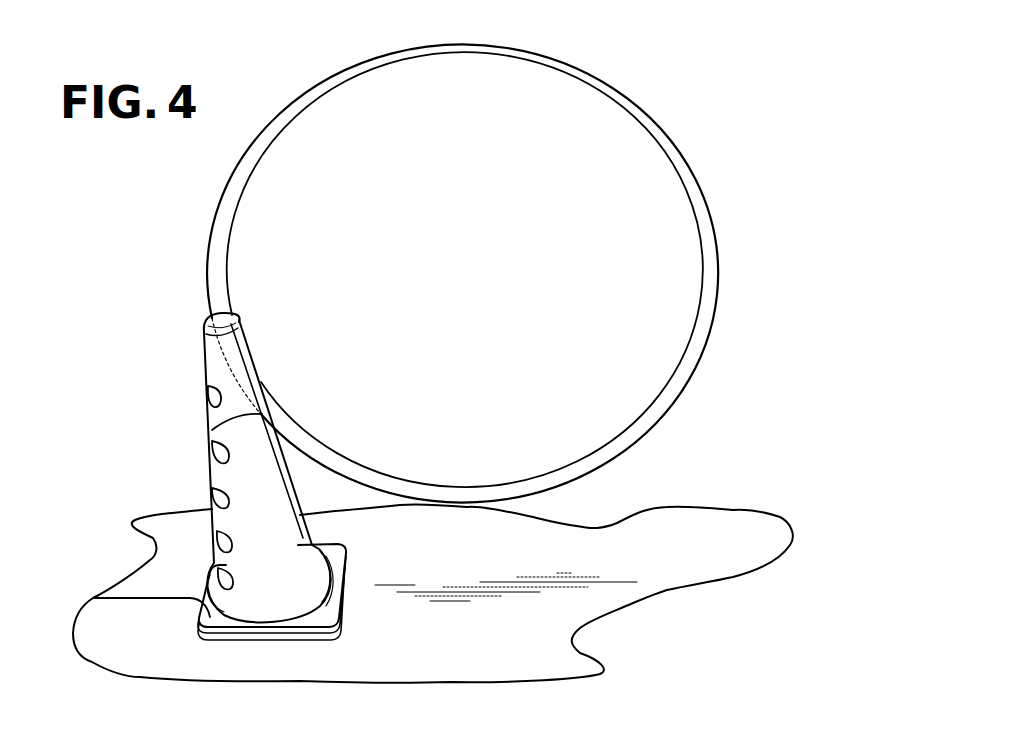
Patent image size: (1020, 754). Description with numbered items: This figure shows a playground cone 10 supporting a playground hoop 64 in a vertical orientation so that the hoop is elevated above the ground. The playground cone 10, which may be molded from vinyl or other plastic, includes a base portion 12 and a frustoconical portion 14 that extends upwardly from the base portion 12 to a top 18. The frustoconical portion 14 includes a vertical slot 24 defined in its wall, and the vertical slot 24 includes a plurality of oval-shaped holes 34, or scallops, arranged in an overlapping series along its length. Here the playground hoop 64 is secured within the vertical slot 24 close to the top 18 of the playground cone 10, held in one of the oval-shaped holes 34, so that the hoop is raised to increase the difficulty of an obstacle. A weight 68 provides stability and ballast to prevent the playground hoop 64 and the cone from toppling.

The playground cone 10 is at (196, 414).
The base portion 12 is at (197, 628).
The frustoconical portion 14 is at (237, 520).
The top 18 is at (209, 316).
The vertical slot 24 is at (206, 338).
The oval-shaped holes 34 is at (212, 430).
The playground hoop 64 is at (305, 97).
The weight 68 is at (95, 598).